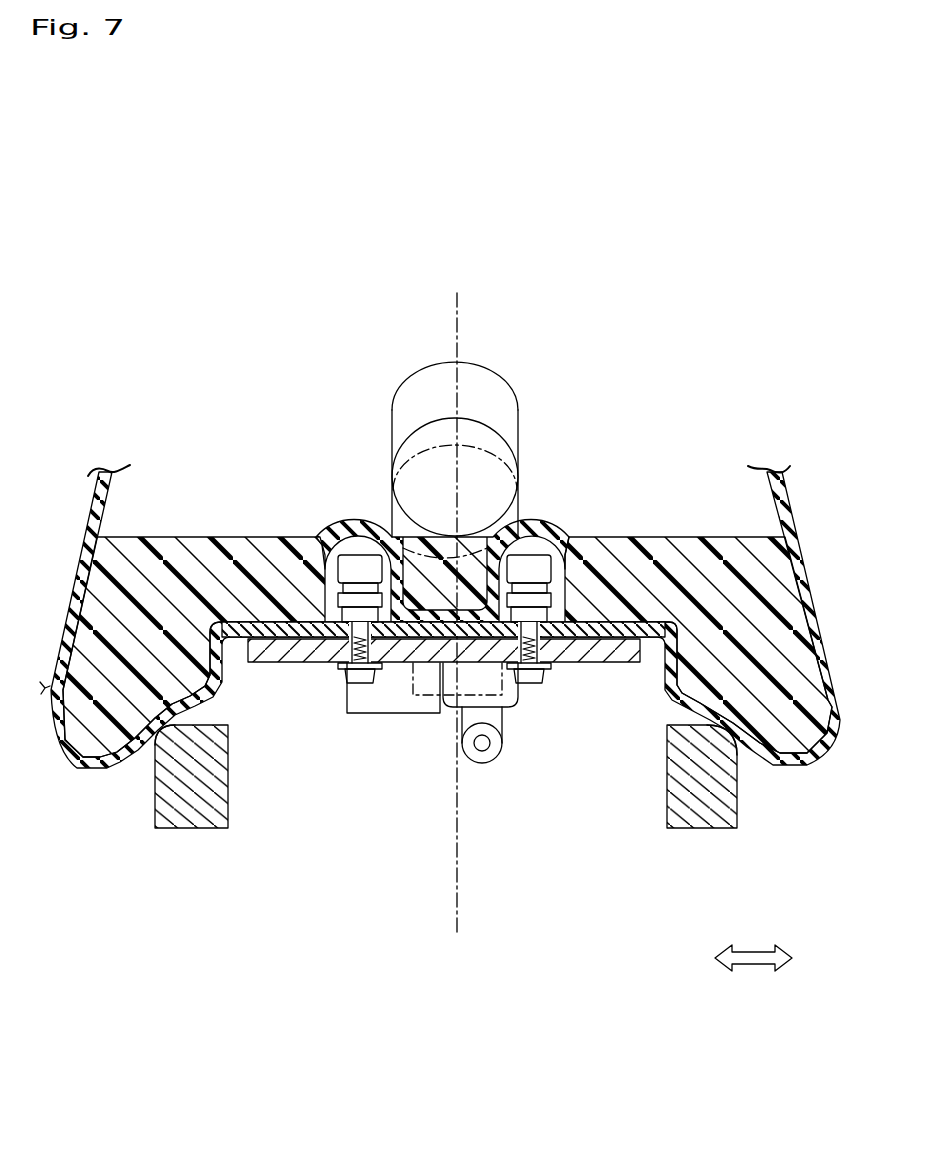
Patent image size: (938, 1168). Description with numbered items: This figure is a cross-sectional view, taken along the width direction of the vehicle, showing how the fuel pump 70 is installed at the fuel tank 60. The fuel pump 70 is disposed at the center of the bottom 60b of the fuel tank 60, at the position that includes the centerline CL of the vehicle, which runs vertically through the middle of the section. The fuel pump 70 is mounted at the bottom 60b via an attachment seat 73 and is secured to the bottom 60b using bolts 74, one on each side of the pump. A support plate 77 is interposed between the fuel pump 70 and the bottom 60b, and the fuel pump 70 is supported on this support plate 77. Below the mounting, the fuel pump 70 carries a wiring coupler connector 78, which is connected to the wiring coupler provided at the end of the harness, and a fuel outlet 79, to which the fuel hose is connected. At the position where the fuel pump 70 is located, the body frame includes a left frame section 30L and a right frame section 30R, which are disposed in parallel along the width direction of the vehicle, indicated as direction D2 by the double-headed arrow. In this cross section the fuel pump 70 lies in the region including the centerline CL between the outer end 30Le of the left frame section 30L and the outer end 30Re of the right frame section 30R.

The centerline CL is at (458, 313).
The fuel tank 60 is at (108, 513).
The bottom 60b is at (232, 648).
The fuel pump 70 is at (505, 382).
The attachment seat 73 is at (317, 656).
The bolts 74 is at (359, 687).
The support plate 77 is at (233, 538).
The wiring coupler connector 78 is at (418, 714).
The fuel outlet 79 is at (484, 755).
The left frame section 30L is at (180, 820).
The outer end 30Le is at (153, 797).
The right frame section 30R is at (693, 820).
The outer end 30Re is at (737, 794).
The direction D2 is at (750, 953).